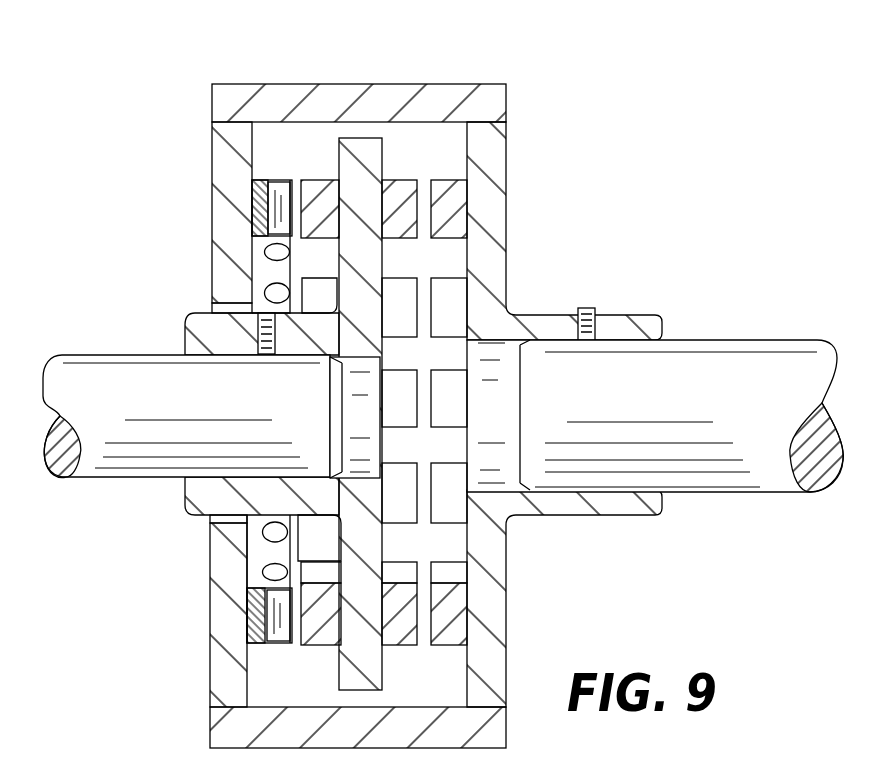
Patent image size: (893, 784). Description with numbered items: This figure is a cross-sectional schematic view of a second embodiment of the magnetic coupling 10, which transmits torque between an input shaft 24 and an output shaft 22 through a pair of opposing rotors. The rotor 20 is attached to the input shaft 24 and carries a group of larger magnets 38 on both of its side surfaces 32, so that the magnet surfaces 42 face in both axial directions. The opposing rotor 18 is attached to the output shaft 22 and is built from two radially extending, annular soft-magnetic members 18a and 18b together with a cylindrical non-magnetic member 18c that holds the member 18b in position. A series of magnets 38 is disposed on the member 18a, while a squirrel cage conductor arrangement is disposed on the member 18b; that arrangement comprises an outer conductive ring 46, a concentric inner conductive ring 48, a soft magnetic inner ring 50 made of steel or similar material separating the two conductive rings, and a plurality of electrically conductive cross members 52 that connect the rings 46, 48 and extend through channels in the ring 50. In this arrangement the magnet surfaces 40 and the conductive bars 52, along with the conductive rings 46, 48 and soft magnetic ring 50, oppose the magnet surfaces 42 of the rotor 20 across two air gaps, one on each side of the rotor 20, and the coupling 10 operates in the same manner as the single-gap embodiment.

The magnetic coupling 10 is at (96, 214).
The rotor 18 is at (406, 378).
The annular soft-magnetic member 18a is at (505, 162).
The annular soft-magnetic member 18b is at (213, 193).
The cylindrical non-magnetic member 18c is at (465, 85).
The rotor 20 is at (382, 150).
The output shaft 22 is at (780, 343).
The input shaft 24 is at (100, 355).
The transverse surface 32 is at (341, 650).
The magnets 38 is at (313, 180).
The magnet surface 40 is at (423, 197).
The magnet surface 42 is at (293, 647).
The outer conductive ring 46 is at (262, 180).
The inner conductive ring 48 is at (262, 255).
The inner ring 50 is at (255, 216).
The conductive cross members 52 is at (283, 180).